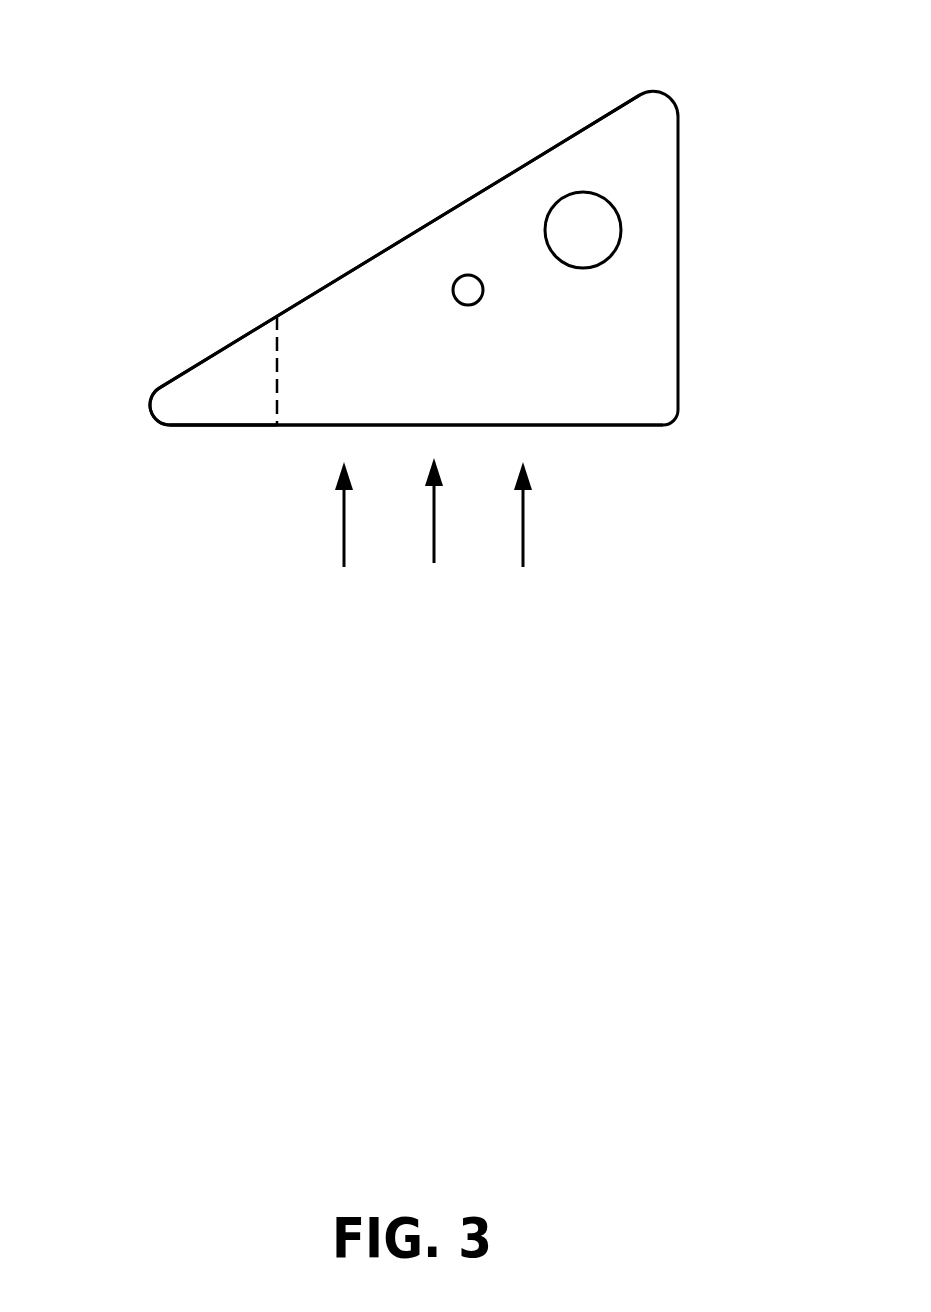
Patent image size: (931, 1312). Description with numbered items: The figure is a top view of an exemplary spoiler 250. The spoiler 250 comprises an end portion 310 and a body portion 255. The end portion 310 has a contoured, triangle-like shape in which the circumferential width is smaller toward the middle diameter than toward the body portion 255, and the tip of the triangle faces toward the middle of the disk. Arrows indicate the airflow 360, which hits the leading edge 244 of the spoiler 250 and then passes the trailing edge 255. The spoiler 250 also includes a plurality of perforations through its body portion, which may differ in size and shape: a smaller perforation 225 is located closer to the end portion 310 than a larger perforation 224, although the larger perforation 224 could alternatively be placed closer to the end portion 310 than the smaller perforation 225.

The spoiler 250 is at (83, 55).
The body portion 255 is at (378, 255).
The larger perforation 224 is at (592, 228).
The smaller perforation 225 is at (468, 290).
The end portion 310 is at (218, 402).
The leading edge 244 is at (618, 425).
The airflow 360 is at (433, 517).